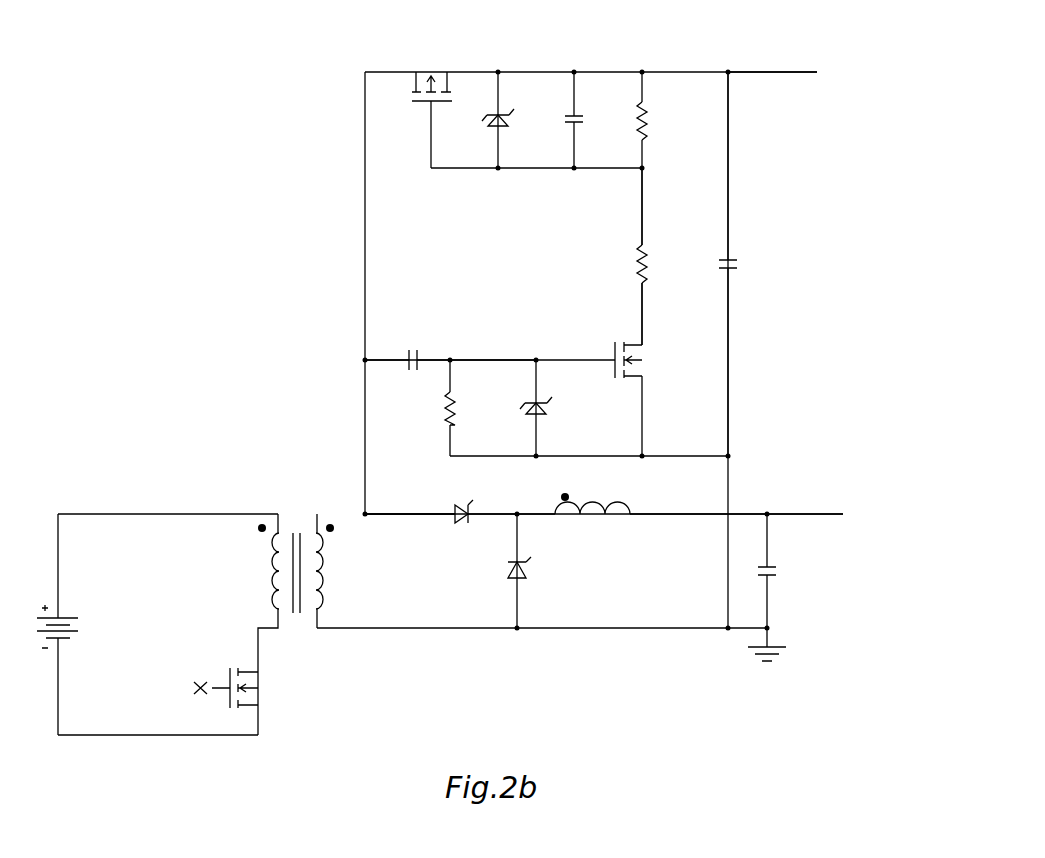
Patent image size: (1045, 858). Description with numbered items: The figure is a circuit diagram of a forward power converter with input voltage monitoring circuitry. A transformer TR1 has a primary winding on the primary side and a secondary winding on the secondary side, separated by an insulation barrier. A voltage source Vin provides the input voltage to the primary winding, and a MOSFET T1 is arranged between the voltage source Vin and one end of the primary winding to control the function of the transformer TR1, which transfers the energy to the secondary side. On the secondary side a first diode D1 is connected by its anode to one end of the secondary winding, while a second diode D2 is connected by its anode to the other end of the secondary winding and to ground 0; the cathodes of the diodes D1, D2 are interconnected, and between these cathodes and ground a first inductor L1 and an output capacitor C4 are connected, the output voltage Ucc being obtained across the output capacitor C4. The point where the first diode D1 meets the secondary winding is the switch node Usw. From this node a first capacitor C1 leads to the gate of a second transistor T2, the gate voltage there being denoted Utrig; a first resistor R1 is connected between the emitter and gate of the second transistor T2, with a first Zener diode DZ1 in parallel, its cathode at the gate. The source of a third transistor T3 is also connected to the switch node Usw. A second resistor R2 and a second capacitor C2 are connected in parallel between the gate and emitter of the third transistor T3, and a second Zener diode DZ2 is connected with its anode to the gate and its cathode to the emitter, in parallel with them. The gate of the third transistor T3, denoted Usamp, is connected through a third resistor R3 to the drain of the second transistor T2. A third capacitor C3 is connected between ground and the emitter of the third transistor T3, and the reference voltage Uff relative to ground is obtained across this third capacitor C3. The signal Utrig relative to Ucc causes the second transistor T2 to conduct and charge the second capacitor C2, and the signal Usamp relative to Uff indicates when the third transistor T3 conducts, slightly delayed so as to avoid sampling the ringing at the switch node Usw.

The MOSFET T1 is at (262, 696).
The second transistor T2 is at (608, 348).
The third transistor T3 is at (436, 70).
The transformer TR1 is at (290, 520).
The first capacitor C1 is at (426, 337).
The second capacitor C2 is at (592, 108).
The third capacitor C3 is at (736, 275).
The output capacitor C4 is at (774, 566).
The first resistor R1 is at (455, 422).
The second resistor R2 is at (646, 132).
The third resistor R3 is at (652, 260).
The first Zener diode DZ1 is at (548, 410).
The second Zener diode DZ2 is at (504, 120).
The first diode D1 is at (476, 502).
The second diode D2 is at (530, 572).
The first inductor L1 is at (618, 516).
The voltage source Vin is at (74, 626).
The reference voltage Uff is at (772, 62).
The gate voltage of the third transistor Usamp is at (671, 206).
The gate voltage of the second transistor Utrig is at (493, 350).
The switch node Usw is at (410, 504).
The output voltage Ucc is at (805, 503).
The ground 0 is at (767, 656).